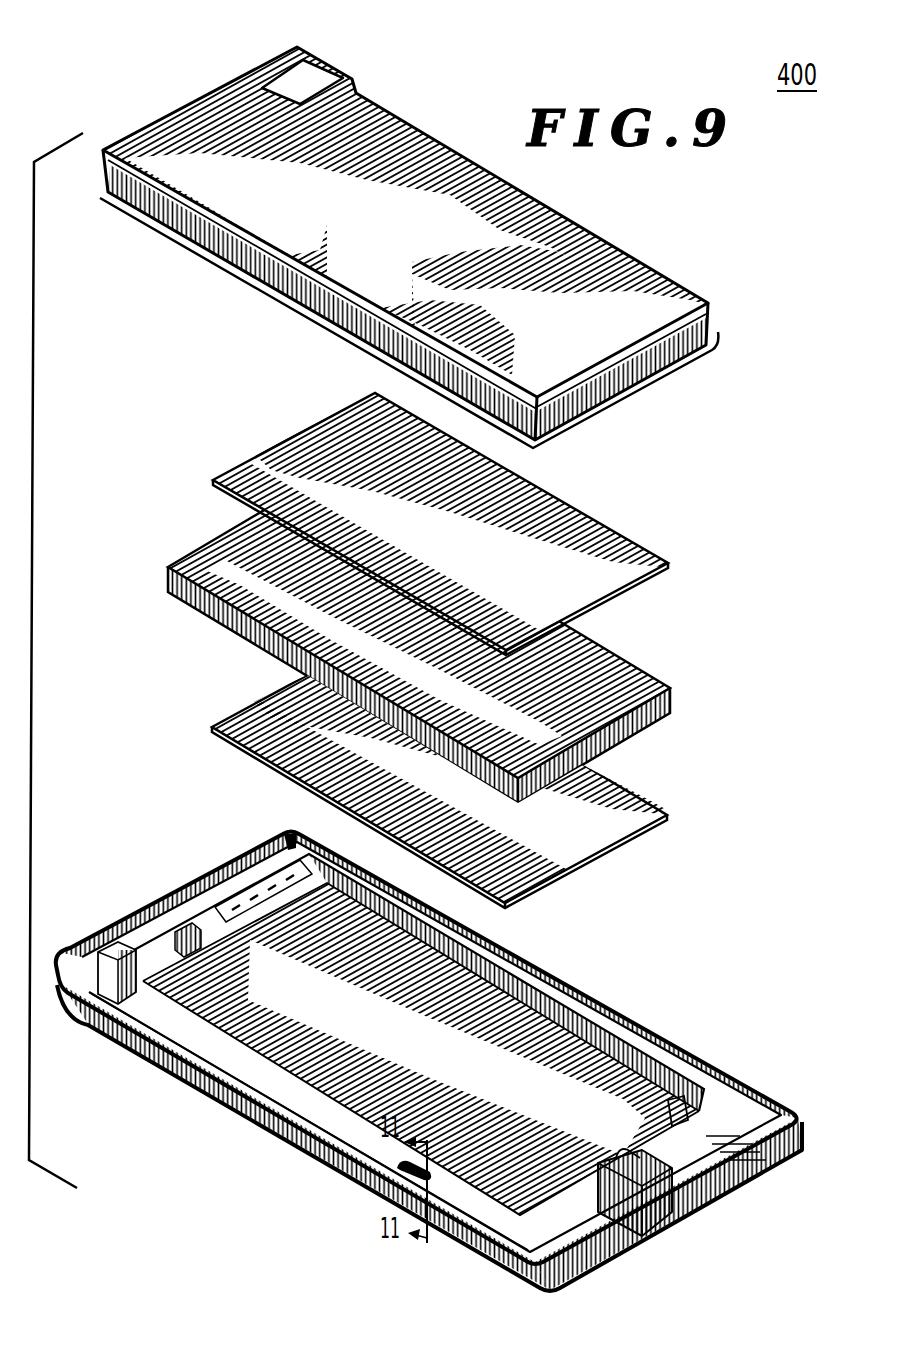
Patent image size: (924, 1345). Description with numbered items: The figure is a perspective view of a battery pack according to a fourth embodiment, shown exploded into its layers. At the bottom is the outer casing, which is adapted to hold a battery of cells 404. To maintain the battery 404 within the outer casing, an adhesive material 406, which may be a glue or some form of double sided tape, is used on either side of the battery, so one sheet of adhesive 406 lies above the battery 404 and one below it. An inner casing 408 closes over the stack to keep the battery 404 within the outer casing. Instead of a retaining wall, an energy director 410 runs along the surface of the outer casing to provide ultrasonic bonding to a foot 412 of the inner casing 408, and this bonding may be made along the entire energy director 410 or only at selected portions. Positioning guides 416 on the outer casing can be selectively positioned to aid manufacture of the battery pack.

The battery of cells 404 is at (643, 688).
The adhesive material 406 is at (643, 562).
The inner casing 408 is at (645, 297).
The energy director 410 is at (640, 1040).
The foot 412 is at (153, 218).
The positioning guides 416 is at (364, 1165).